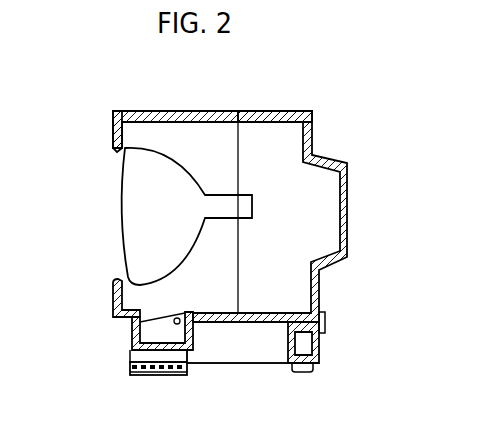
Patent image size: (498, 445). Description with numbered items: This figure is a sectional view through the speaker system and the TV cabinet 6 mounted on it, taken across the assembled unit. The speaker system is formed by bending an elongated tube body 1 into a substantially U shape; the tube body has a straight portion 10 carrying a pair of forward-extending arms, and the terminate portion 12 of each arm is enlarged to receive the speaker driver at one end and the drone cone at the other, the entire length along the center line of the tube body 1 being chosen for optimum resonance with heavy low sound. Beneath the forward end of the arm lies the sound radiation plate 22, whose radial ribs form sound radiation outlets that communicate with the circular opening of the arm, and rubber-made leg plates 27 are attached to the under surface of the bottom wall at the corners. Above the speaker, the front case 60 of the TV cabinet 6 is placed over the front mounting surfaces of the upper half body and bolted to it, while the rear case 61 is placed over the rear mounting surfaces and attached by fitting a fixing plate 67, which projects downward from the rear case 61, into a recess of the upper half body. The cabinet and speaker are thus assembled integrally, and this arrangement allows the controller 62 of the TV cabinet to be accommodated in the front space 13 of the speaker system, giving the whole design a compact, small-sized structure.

The tube body 1 is at (272, 364).
The TV cabinet 6 is at (206, 107).
The straight portion 10 is at (303, 343).
The terminate portion of the arm 12 is at (157, 378).
The front space 13 is at (208, 345).
The sound radiation plate 22 is at (130, 368).
The leg plates 27 is at (308, 373).
The front case 60 is at (143, 112).
The rear case 61 is at (253, 110).
The controller 62 is at (148, 327).
The fixing plate 67 is at (325, 325).